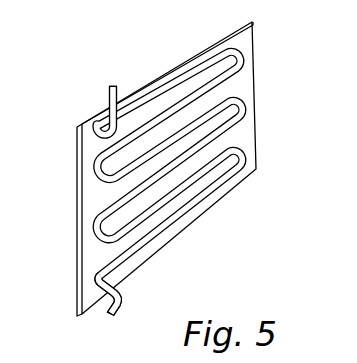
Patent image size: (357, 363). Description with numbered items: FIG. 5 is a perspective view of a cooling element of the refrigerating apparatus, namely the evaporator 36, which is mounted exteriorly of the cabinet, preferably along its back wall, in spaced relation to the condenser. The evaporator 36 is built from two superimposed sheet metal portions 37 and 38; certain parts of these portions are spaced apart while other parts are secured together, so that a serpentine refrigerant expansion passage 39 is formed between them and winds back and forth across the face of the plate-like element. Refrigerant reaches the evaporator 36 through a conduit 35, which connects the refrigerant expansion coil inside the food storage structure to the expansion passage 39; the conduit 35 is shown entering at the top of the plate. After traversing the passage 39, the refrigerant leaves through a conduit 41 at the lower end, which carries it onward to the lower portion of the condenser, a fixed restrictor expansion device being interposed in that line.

The conduit 35 is at (109, 97).
The evaporator 36 is at (90, 217).
The sheet metal portion 37 is at (76, 160).
The sheet metal portion 38 is at (80, 180).
The refrigerant expansion passage 39 is at (244, 97).
The conduit 41 is at (124, 303).